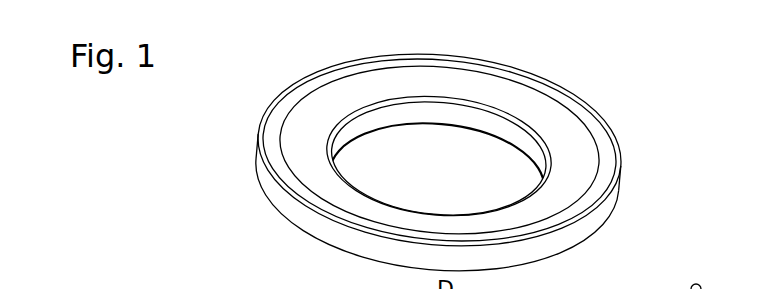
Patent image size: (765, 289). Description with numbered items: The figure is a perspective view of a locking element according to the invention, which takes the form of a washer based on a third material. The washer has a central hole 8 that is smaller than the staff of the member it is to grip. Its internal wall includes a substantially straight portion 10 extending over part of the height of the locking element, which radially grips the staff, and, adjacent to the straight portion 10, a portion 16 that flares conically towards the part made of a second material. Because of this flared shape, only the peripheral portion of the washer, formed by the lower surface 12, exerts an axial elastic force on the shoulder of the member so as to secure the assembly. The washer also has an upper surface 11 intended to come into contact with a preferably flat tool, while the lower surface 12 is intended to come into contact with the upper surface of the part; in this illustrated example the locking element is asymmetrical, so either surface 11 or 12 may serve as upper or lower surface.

The hole 8 is at (513, 102).
The substantially straight portion 10 is at (434, 107).
The upper surface 11 is at (320, 239).
The lower surface 12 is at (614, 146).
The conically flaring portion 16 is at (352, 100).